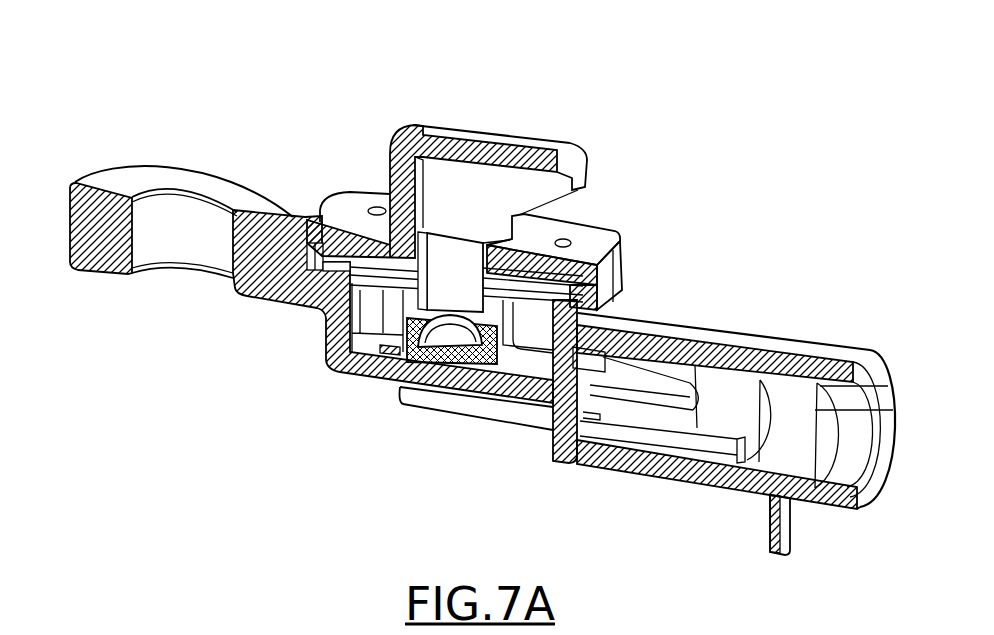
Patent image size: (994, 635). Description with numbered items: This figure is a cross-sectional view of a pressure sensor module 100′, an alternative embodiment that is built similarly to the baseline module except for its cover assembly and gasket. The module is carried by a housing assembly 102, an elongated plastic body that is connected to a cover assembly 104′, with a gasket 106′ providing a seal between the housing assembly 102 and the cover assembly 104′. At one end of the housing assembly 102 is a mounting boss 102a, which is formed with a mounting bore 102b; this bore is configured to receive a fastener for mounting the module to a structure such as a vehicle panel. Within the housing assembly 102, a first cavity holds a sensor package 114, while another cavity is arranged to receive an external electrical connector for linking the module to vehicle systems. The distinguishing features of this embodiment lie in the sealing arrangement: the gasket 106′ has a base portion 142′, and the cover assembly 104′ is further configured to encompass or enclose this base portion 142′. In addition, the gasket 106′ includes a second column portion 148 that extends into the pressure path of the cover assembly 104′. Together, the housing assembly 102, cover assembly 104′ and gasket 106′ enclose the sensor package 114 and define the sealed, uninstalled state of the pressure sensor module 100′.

The pressure sensor module 100′ is at (344, 42).
The housing assembly 102 is at (763, 338).
The mounting boss 102a is at (115, 168).
The mounting bore 102b is at (190, 250).
The cover assembly 104′ is at (628, 278).
The gasket 106′ is at (407, 303).
The sensor package 114 is at (450, 360).
The base portion 142′ is at (309, 224).
The second column portion 148 is at (457, 225).